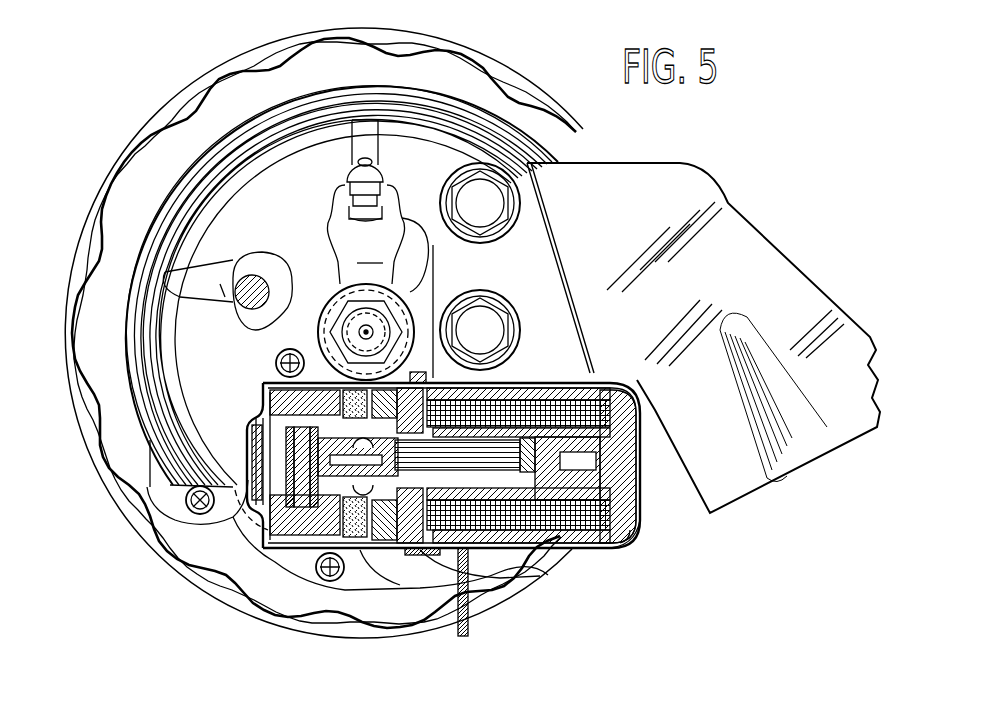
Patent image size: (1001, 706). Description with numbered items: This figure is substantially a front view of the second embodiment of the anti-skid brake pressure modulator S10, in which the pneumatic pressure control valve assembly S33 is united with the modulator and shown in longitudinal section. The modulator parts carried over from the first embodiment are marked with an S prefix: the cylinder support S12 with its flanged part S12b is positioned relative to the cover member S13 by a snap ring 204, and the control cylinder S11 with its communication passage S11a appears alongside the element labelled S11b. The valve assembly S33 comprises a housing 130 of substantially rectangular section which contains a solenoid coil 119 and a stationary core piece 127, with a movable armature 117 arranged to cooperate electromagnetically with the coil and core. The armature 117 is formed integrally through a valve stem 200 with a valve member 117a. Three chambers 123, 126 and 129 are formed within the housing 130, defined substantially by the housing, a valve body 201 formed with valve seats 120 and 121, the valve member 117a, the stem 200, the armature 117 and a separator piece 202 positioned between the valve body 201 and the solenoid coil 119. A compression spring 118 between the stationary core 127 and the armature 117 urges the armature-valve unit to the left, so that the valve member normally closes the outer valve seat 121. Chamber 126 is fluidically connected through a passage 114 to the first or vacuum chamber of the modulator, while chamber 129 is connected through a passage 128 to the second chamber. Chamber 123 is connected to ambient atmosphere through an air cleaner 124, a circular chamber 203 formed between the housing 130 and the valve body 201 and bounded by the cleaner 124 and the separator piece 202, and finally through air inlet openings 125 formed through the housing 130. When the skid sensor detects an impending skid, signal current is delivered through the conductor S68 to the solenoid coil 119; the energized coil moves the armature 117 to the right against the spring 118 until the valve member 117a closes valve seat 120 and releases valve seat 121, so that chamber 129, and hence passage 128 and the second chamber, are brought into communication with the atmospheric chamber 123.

The pressure modulator S10 is at (225, 66).
The snap ring 204 is at (478, 80).
The cover member S13 is at (130, 148).
The cylinder support S12 is at (294, 199).
The flanged part S12b is at (252, 277).
The bracket S11b is at (353, 326).
The control cylinder S11 is at (398, 286).
The communication passage S11a is at (360, 332).
The separator piece 202 is at (430, 378).
The air inlet openings 125 is at (420, 368).
The solenoid coil 119 is at (546, 410).
The valve member 117a is at (313, 407).
The outer valve seat 121 is at (260, 432).
The chamber 123 is at (250, 452).
The chamber 126 is at (332, 450).
The movable armature 117 is at (456, 467).
The compression spring 118 is at (478, 480).
The stationary core piece 127 is at (592, 470).
The passage 114 is at (385, 472).
The valve stem 200 is at (338, 496).
The passage 128 is at (258, 500).
The chamber 129 is at (270, 560).
The valve seat 120 is at (322, 556).
The air cleaner 124 is at (348, 568).
The valve body 201 is at (418, 562).
The circular chamber 203 is at (396, 584).
The housing 130 is at (622, 538).
The control valve assembly S33 is at (606, 542).
The conductor S68 is at (468, 626).